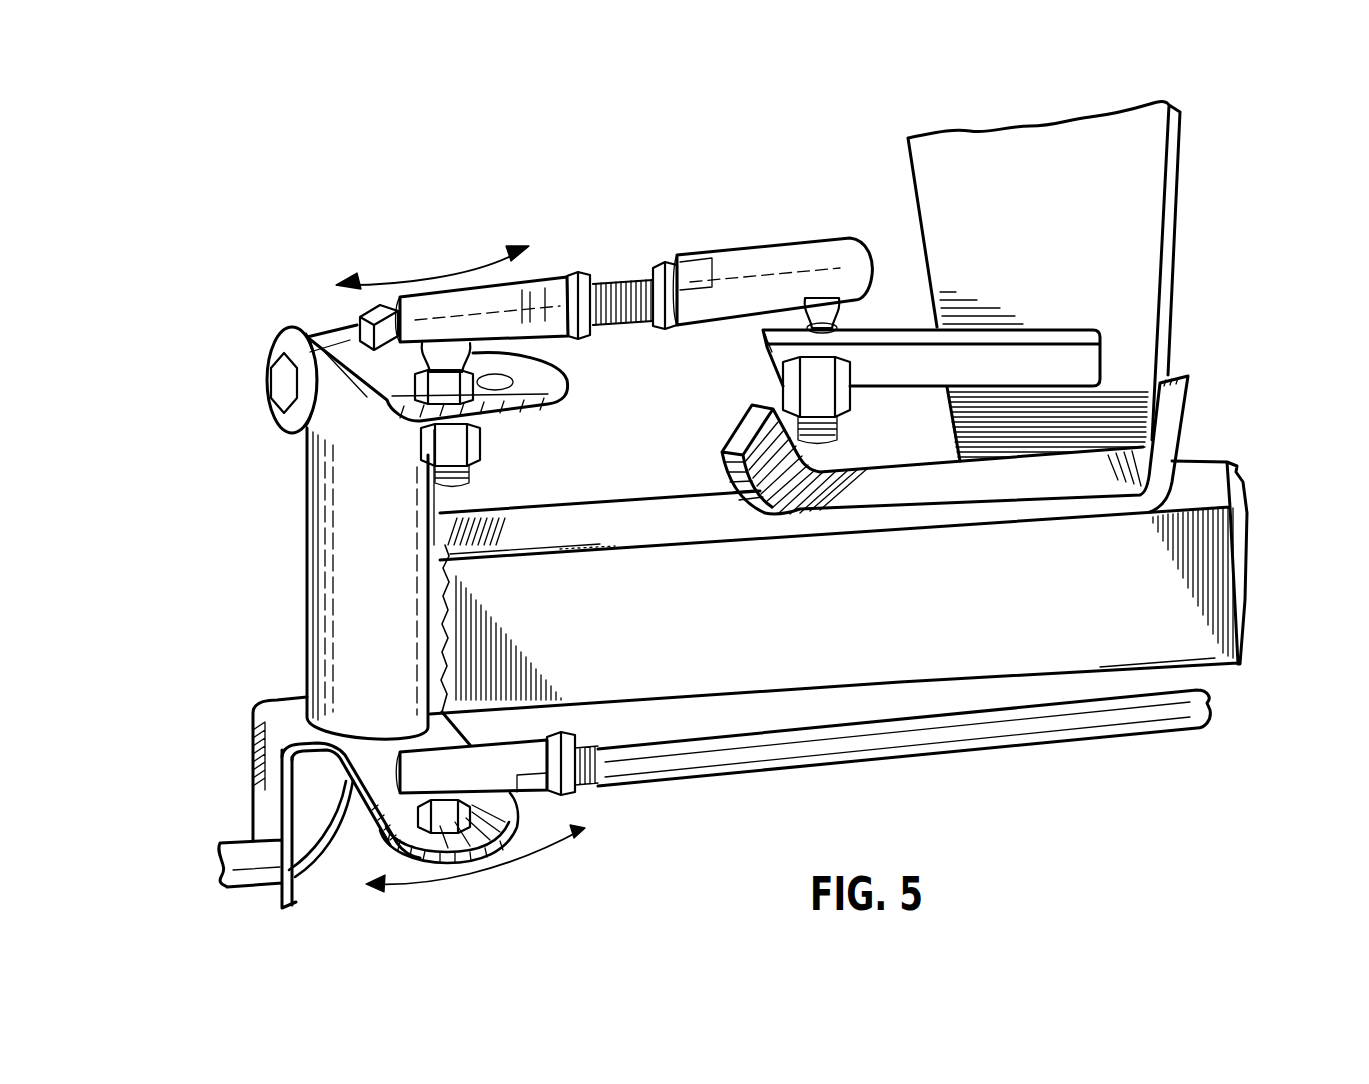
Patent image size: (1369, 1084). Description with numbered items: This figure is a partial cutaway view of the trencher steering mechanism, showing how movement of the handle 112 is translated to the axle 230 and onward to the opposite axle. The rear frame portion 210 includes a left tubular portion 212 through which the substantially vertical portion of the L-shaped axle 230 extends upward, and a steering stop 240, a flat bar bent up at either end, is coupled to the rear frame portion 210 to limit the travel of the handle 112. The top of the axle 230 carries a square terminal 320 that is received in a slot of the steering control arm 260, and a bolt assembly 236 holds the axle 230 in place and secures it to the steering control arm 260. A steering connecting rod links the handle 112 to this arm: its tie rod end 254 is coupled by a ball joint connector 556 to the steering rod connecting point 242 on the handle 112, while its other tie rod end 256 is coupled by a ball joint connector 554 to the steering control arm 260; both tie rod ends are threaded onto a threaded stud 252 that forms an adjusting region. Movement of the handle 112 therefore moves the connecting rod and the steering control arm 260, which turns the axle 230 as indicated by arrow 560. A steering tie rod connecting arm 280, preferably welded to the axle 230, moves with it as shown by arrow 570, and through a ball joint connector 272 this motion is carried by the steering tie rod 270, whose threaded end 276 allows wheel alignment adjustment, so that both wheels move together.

The handle 112 is at (1062, 221).
The rear frame portion 210 is at (755, 624).
The left tubular portion 212 is at (337, 548).
The axle 230 is at (325, 855).
The bolt assembly 236 is at (268, 387).
The steering stop 240 is at (1163, 448).
The steering rod connecting point 242 is at (908, 367).
The threaded stud 252 is at (623, 283).
The tie rod end 254 is at (797, 250).
The tie rod end 256 is at (510, 297).
The steering control arm 260 is at (563, 353).
The steering tie rod 270 is at (1047, 712).
The ball joint connector 272 is at (472, 808).
The threaded end 276 is at (585, 750).
The steering tie rod connecting arm 280 is at (293, 713).
The square terminal 320 is at (362, 307).
The ball joint connector 554 is at (410, 372).
The ball joint connector 556 is at (863, 307).
The arrow 560 is at (387, 284).
The arrow 570 is at (500, 873).